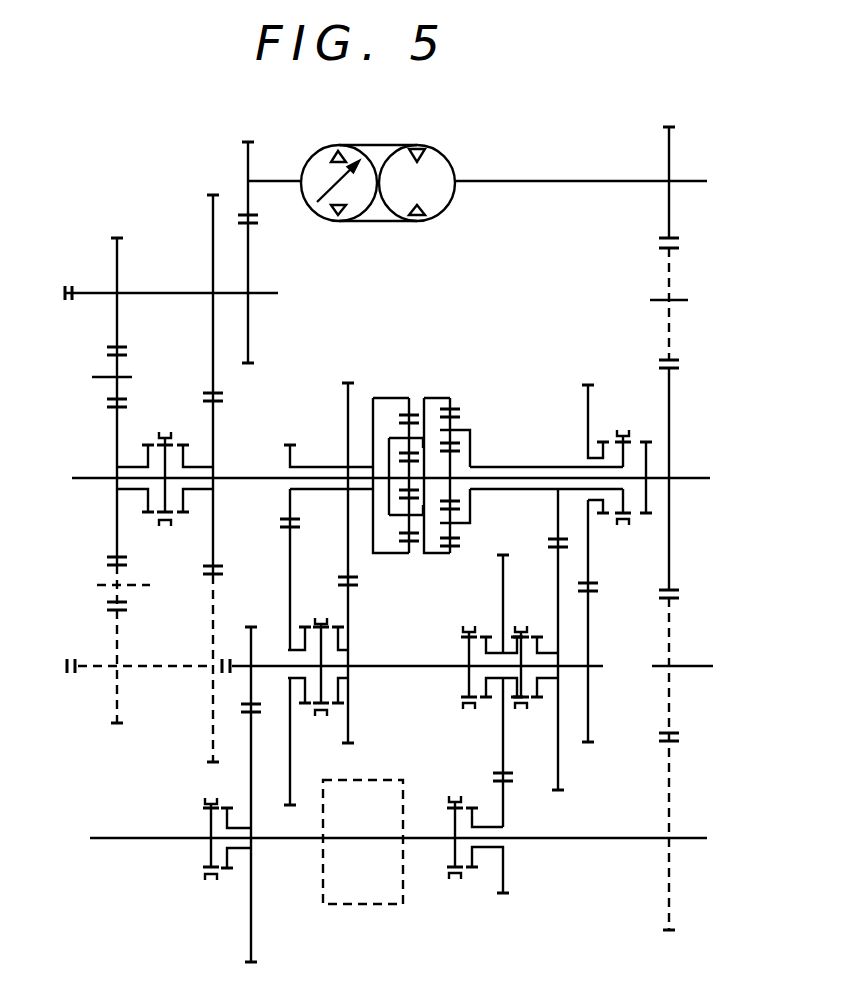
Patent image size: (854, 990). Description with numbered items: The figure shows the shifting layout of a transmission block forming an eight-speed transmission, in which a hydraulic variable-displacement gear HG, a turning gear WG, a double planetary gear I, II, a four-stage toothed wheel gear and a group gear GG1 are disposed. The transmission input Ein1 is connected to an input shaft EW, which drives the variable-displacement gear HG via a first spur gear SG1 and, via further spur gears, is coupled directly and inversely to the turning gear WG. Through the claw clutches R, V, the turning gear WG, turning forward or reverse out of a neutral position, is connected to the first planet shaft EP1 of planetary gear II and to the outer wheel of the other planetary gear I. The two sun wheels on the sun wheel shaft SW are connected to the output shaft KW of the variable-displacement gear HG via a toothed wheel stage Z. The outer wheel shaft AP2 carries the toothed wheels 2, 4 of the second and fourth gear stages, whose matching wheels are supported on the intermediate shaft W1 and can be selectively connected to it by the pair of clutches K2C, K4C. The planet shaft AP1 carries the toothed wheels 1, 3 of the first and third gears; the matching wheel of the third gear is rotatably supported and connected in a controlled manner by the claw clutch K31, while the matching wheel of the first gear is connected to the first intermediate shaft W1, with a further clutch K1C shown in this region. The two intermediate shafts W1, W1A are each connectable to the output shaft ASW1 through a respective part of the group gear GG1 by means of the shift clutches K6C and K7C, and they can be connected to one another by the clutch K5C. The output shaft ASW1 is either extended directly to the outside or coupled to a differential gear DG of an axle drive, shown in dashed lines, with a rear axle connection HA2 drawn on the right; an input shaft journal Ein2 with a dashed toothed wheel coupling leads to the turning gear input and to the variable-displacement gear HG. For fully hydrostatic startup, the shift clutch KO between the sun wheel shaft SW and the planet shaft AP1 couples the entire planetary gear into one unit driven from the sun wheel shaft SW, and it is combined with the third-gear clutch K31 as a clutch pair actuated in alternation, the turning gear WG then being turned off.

The transmission input Ein1 is at (89, 292).
The claw clutch R is at (147, 444).
The claw clutch V is at (178, 444).
The turning gear WG is at (187, 421).
The first spur gear SG1 is at (250, 337).
The input shaft EW is at (279, 292).
The hydraulic variable-displacement gear HG is at (440, 207).
The output shaft of the variable-displacement gear KW is at (623, 184).
The toothed wheel stage Z is at (667, 253).
The sun wheel shaft SW is at (722, 467).
The first planet shaft EP1 is at (232, 477).
The outer wheel shaft AP2 is at (324, 466).
The toothed wheel 2 is at (288, 508).
The toothed wheel 4 is at (348, 520).
The planetary gear II is at (372, 354).
The planetary gear I is at (445, 354).
The planet shaft AP1 is at (508, 466).
The toothed wheel 1 is at (558, 508).
The claw clutch K31 is at (603, 440).
The toothed wheel 3 is at (591, 594).
The shift clutch KO is at (652, 440).
The second rear axle drive HA2 is at (688, 666).
The input shaft journal Ein2 is at (130, 684).
The first intermediate shaft W1 is at (425, 668).
The clutch K2C is at (303, 626).
The clutch K4C is at (340, 627).
The clutch K5C is at (466, 626).
The clutch K1C is at (520, 626).
The intermediate shaft W1A is at (503, 682).
The shift clutch K7C is at (455, 797).
The shift clutch K6C is at (209, 799).
The group gear GG1 is at (252, 938).
The output shaft ASW1 is at (425, 823).
The differential gear DG is at (380, 888).